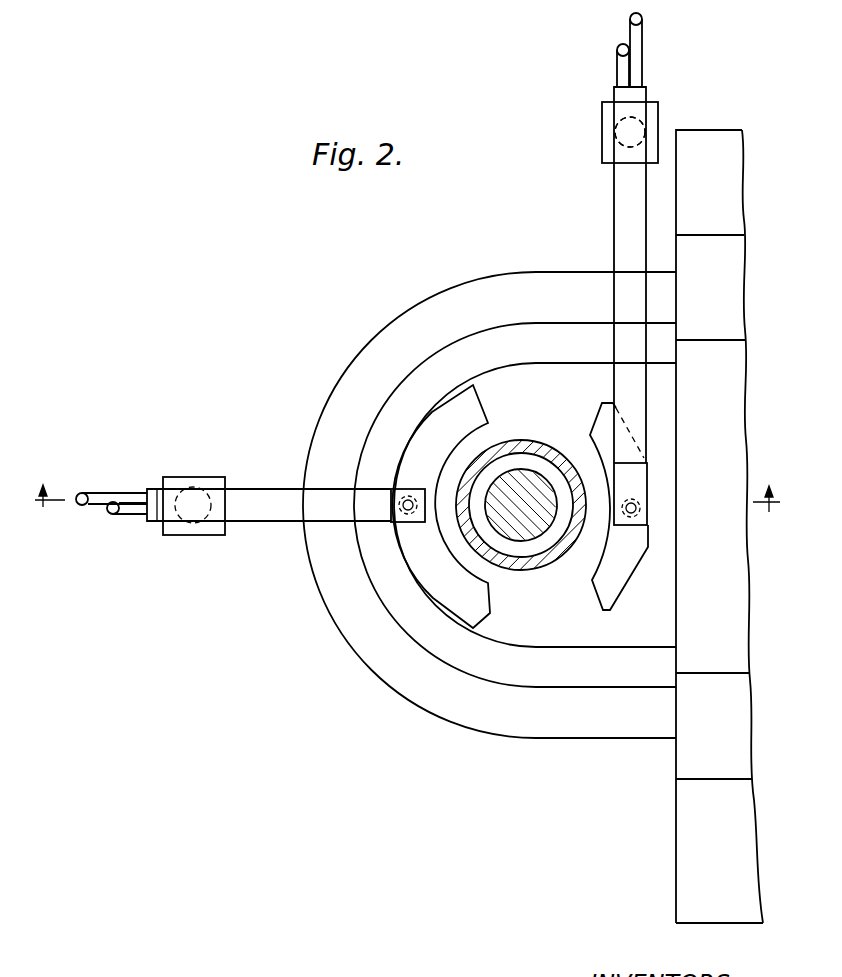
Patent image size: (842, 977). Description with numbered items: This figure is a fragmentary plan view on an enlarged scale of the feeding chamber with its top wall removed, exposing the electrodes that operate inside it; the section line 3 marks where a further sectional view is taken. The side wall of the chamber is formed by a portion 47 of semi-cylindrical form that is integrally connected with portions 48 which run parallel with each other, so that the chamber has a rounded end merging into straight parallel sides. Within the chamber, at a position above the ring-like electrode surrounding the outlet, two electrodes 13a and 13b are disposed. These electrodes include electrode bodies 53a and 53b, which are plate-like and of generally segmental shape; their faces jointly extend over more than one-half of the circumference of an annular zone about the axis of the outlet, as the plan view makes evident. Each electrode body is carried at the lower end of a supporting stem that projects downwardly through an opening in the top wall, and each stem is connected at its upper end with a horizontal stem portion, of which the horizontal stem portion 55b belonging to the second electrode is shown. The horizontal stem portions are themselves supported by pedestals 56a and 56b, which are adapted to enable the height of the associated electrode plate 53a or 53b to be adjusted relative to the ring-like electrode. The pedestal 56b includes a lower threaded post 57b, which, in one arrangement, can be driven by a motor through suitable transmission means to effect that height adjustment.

The section line 3- 3 is at (407, 483).
The electrode 13a is at (491, 420).
The electrode 13b is at (592, 408).
The semi-cylindrical portion of side wall 47 is at (408, 618).
The parallel portions of side wall 48 is at (597, 318).
The electrode body 53a is at (422, 550).
The electrode body 53b is at (632, 568).
The horizontal stem portion 55b is at (637, 187).
The pedestal 56a is at (183, 477).
The pedestal 56b is at (605, 88).
The lower threaded post 57b is at (658, 108).